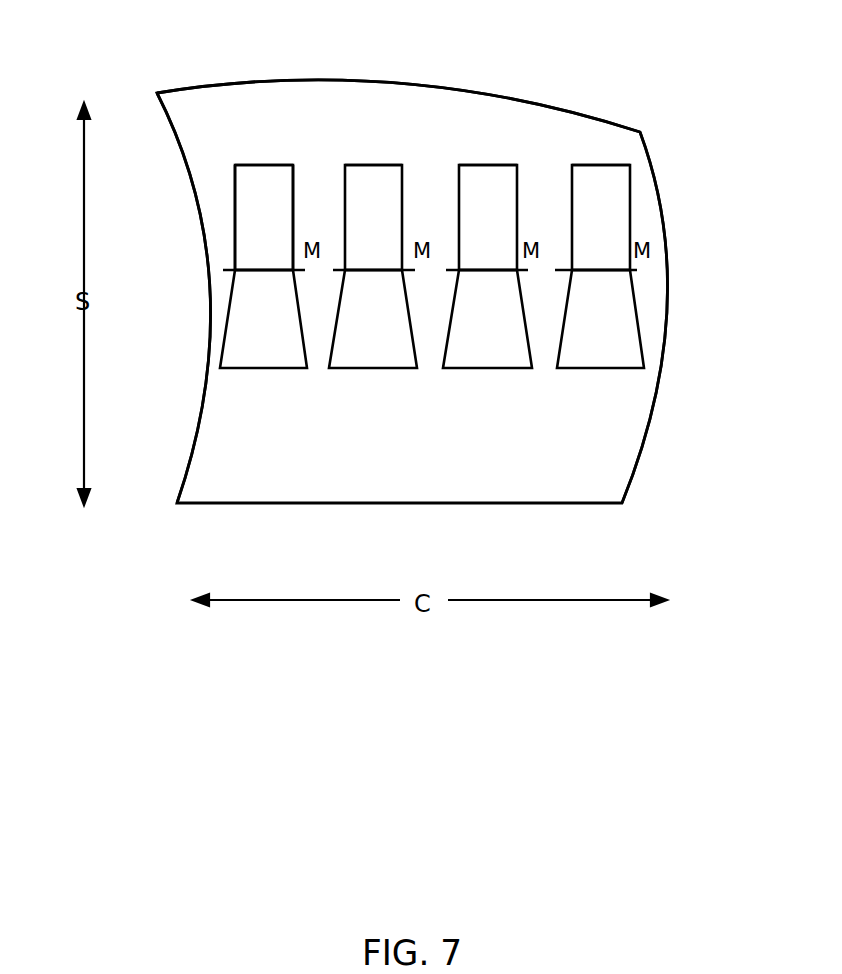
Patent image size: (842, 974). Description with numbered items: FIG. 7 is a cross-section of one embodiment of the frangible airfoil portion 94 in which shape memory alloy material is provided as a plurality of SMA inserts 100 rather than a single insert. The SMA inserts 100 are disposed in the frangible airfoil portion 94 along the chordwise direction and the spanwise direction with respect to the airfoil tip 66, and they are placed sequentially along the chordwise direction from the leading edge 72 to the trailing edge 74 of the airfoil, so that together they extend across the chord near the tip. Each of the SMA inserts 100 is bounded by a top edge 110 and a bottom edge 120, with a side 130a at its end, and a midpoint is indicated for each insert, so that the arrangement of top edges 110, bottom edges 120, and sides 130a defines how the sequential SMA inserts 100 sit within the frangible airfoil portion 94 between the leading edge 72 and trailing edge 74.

The airfoil tip 66 is at (318, 82).
The leading edge 72 is at (188, 440).
The trailing edge 74 is at (667, 292).
The frangible airfoil portion 94 is at (630, 438).
The SMA insert 100 is at (270, 175).
The top edge 110 is at (242, 164).
The bottom edge 120 is at (258, 370).
The side 130a is at (292, 203).